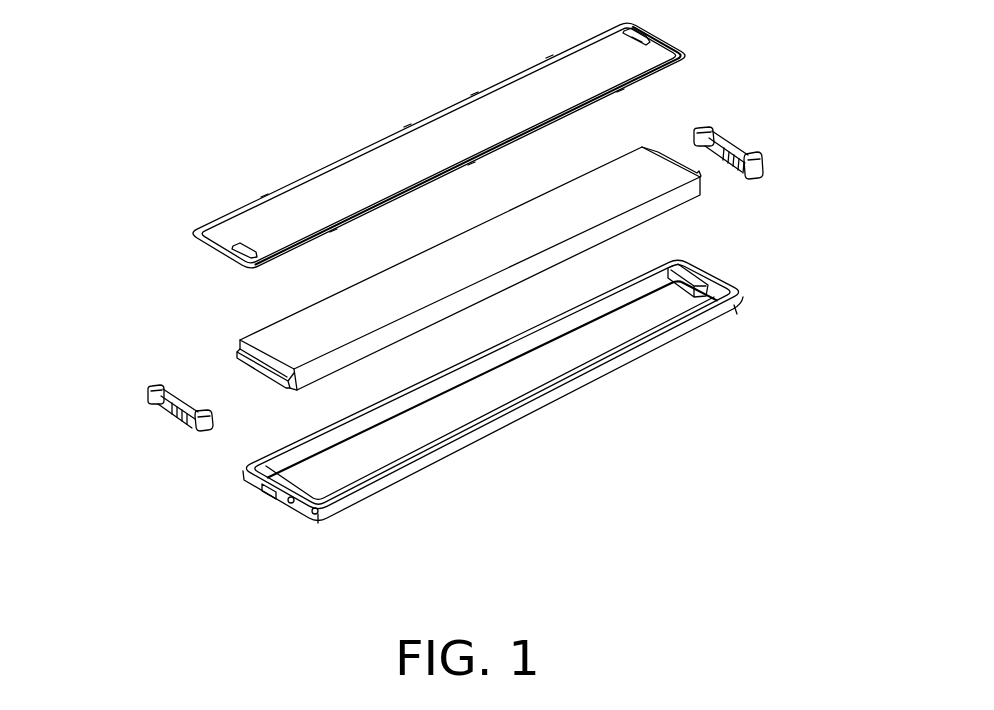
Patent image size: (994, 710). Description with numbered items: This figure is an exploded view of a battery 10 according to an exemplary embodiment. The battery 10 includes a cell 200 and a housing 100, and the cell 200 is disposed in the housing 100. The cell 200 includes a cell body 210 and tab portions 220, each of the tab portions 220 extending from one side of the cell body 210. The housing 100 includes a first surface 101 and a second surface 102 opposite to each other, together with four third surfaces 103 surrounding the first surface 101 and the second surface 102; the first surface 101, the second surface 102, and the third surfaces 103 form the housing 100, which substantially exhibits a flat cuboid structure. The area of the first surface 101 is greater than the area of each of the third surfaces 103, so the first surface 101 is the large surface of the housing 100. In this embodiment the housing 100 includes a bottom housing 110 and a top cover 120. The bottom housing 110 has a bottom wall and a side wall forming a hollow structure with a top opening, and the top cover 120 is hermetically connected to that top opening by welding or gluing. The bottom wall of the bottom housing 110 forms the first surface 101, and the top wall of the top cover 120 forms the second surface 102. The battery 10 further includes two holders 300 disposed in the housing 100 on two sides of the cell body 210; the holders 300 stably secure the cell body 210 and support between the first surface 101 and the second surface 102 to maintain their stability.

The battery 10 is at (102, 54).
The housing 100 is at (88, 265).
The first surface 101 is at (498, 392).
The second surface 102 is at (427, 157).
The third surfaces 103 is at (433, 450).
The bottom housing 110 is at (247, 457).
The top cover 120 is at (208, 250).
The cell 200 is at (860, 183).
The cell body 210 is at (620, 225).
The tab portions 220 is at (697, 175).
The holders 300 is at (733, 150).